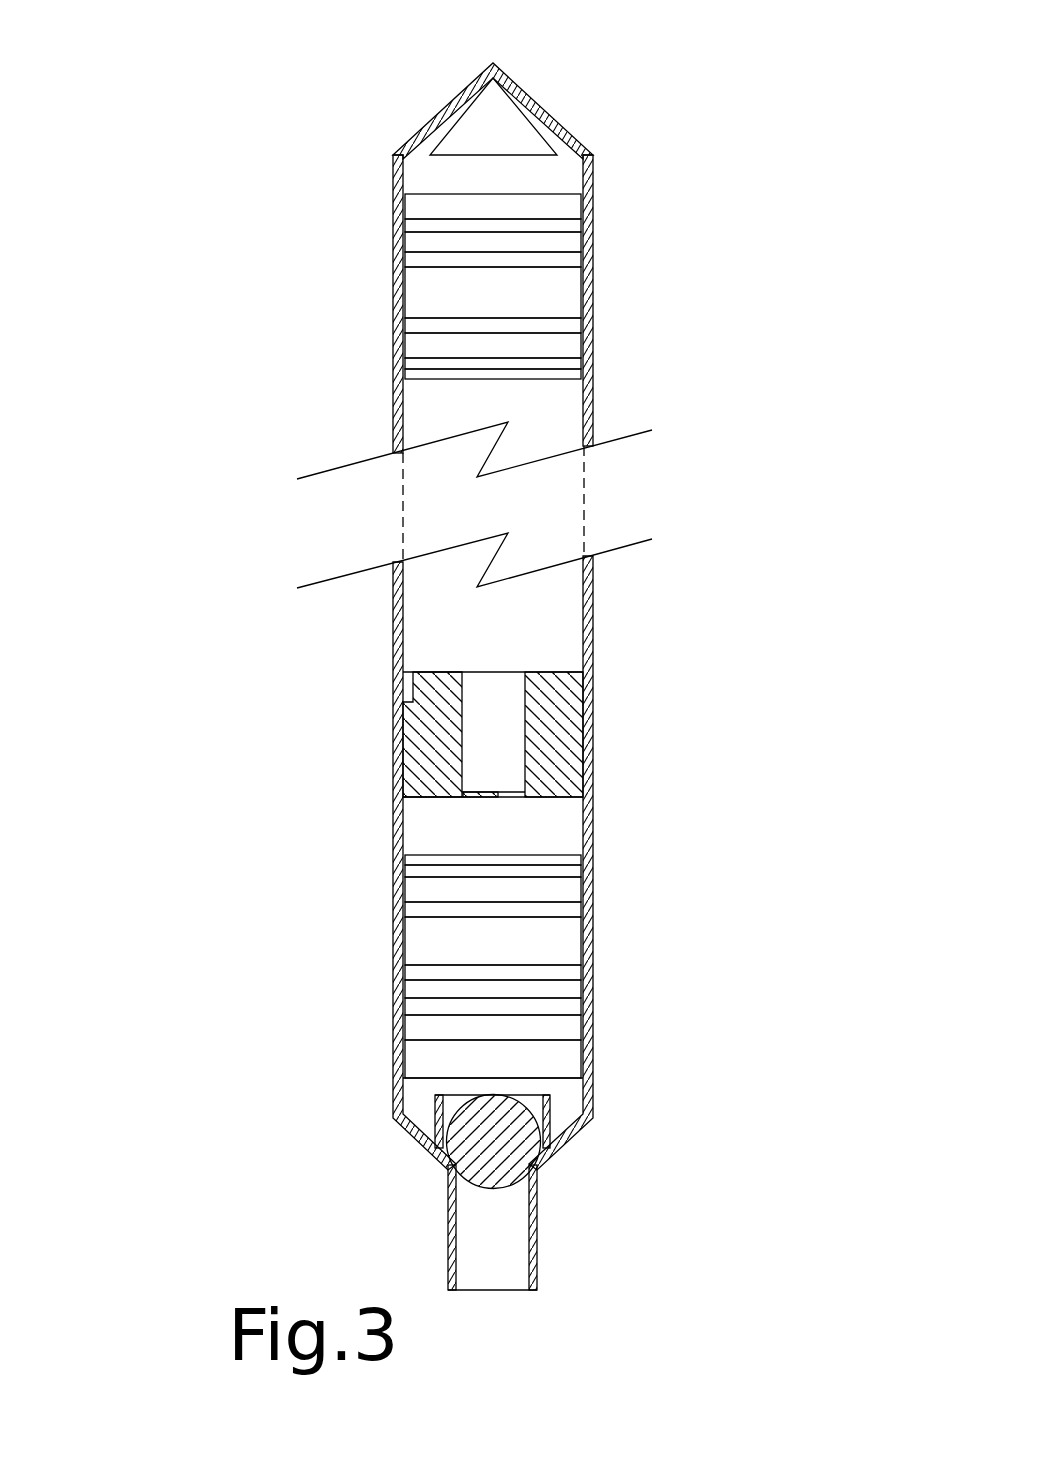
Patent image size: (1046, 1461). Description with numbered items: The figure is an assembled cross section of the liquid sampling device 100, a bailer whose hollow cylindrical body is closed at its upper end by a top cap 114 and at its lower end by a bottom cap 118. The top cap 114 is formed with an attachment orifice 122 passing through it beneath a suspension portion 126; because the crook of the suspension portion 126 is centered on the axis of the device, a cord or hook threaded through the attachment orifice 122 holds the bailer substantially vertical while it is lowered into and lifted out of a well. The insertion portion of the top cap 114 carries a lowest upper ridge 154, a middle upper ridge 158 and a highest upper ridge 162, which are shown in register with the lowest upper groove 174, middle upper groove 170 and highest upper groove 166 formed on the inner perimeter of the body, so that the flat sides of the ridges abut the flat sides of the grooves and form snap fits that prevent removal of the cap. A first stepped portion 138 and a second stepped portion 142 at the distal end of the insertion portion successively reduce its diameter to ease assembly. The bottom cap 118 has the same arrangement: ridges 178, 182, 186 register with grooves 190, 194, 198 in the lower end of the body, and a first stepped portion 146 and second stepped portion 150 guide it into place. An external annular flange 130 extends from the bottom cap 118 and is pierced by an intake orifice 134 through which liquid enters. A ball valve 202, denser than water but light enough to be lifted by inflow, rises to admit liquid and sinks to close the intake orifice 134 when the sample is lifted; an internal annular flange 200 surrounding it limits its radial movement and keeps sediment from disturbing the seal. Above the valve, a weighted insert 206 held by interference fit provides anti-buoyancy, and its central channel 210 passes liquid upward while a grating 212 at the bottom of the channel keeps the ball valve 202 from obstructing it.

The liquid sampling device 100 is at (212, 177).
The top cap 114 is at (610, 159).
The bottom cap 118 is at (614, 1135).
The attachment orifice 122 is at (517, 135).
The suspension portion 126 is at (483, 64).
The external annular flange 130 is at (483, 1242).
The intake orifice 134 is at (502, 1292).
The first stepped portion 138 is at (590, 360).
The second stepped portion 142 is at (590, 372).
The first stepped portion 146 is at (583, 878).
The second stepped portion 150 is at (583, 852).
The lowest upper ridge 154 is at (400, 313).
The middle upper ridge 158 is at (593, 248).
The highest upper ridge 162 is at (400, 221).
The highest upper groove 166 is at (400, 227).
The middle upper groove 170 is at (590, 257).
The lowest upper groove 174 is at (400, 322).
The ridge 178 is at (402, 915).
The ridge 182 is at (402, 978).
The ridge 186 is at (585, 1017).
The groove 190 is at (583, 1012).
The groove 194 is at (402, 985).
The groove 198 is at (402, 910).
The internal annular flange 200 is at (532, 1107).
The ball valve 202 is at (497, 1167).
The weighted insert 206 is at (400, 728).
The central channel 210 is at (502, 730).
The grating 212 is at (480, 798).